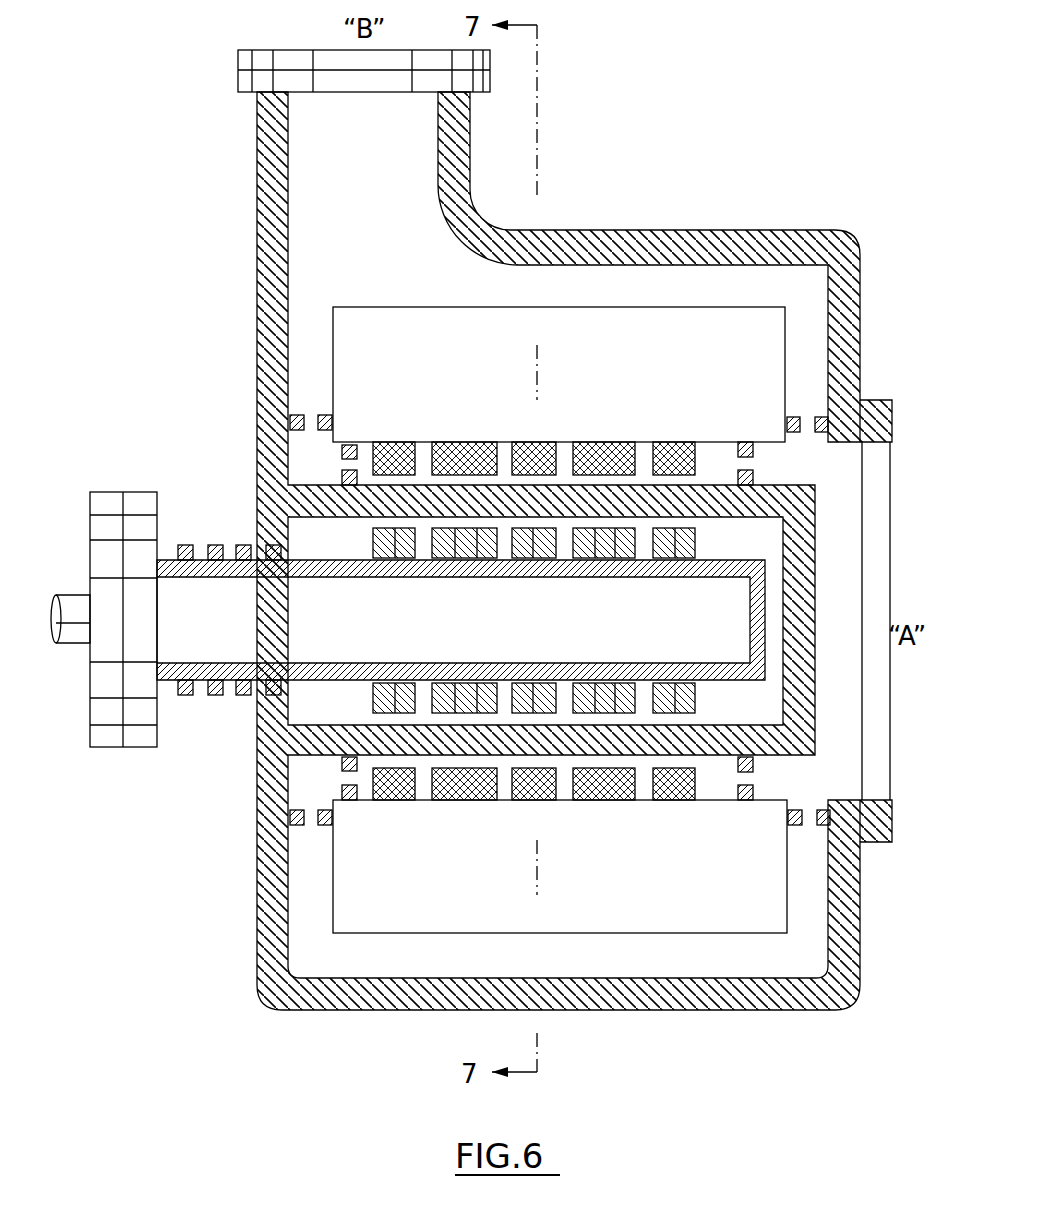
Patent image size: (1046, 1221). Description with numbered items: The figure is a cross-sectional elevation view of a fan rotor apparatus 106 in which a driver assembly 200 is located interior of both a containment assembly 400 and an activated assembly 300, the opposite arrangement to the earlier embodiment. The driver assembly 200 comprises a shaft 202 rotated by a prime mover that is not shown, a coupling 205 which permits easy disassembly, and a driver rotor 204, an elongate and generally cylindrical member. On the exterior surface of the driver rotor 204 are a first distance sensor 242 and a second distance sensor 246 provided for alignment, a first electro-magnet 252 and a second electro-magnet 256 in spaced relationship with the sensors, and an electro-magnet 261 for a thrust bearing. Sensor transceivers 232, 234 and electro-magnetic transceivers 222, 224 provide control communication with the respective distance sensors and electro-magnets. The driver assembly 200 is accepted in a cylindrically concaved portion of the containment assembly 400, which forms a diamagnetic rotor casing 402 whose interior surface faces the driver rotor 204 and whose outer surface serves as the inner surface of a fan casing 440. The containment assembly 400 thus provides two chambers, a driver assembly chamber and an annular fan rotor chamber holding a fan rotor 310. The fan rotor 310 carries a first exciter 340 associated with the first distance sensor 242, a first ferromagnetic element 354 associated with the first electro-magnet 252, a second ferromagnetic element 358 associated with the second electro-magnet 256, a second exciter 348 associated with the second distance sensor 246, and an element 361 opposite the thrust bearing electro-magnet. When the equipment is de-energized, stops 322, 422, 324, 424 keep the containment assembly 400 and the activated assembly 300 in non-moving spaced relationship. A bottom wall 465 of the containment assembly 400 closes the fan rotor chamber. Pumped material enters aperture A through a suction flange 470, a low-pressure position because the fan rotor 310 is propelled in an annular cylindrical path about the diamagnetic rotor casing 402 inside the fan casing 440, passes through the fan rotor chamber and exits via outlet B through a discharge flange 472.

The fan rotor apparatus 106 is at (635, 1030).
The driver assembly 200 is at (322, 683).
The shaft 202 is at (82, 638).
The driver rotor 204 is at (283, 648).
The coupling 205 is at (145, 733).
The electro-magnetic transceiver 222 is at (185, 545).
The electro-magnetic transceiver 224 is at (213, 545).
The sensor transceiver 232 is at (243, 545).
The sensor transceiver 234 is at (276, 546).
The first distance sensor 242 is at (395, 562).
The second distance sensor 246 is at (673, 547).
The first electro-magnet 252 is at (450, 562).
The second electro-magnet 256 is at (612, 562).
The thrust bearing electro-magnet 261 is at (532, 562).
The activated assembly 300 is at (605, 300).
The fan rotor 310 is at (682, 891).
The stop 322 is at (745, 441).
The stop 324 is at (318, 417).
The first exciter 340 is at (393, 441).
The second exciter 348 is at (662, 441).
The first ferromagnetic element 354 is at (455, 441).
The second ferromagnetic element 358 is at (607, 441).
The thrust bearing ferromagnetic element 361 is at (501, 441).
The containment assembly 400 is at (245, 163).
The diamagnetic rotor casing 402 is at (807, 728).
The stop 422 is at (755, 476).
The stop 424 is at (292, 422).
The fan casing 440 is at (587, 247).
The housing bottom wall 465 is at (410, 957).
The suction flange 470 is at (886, 845).
The discharge flange 472 is at (330, 52).